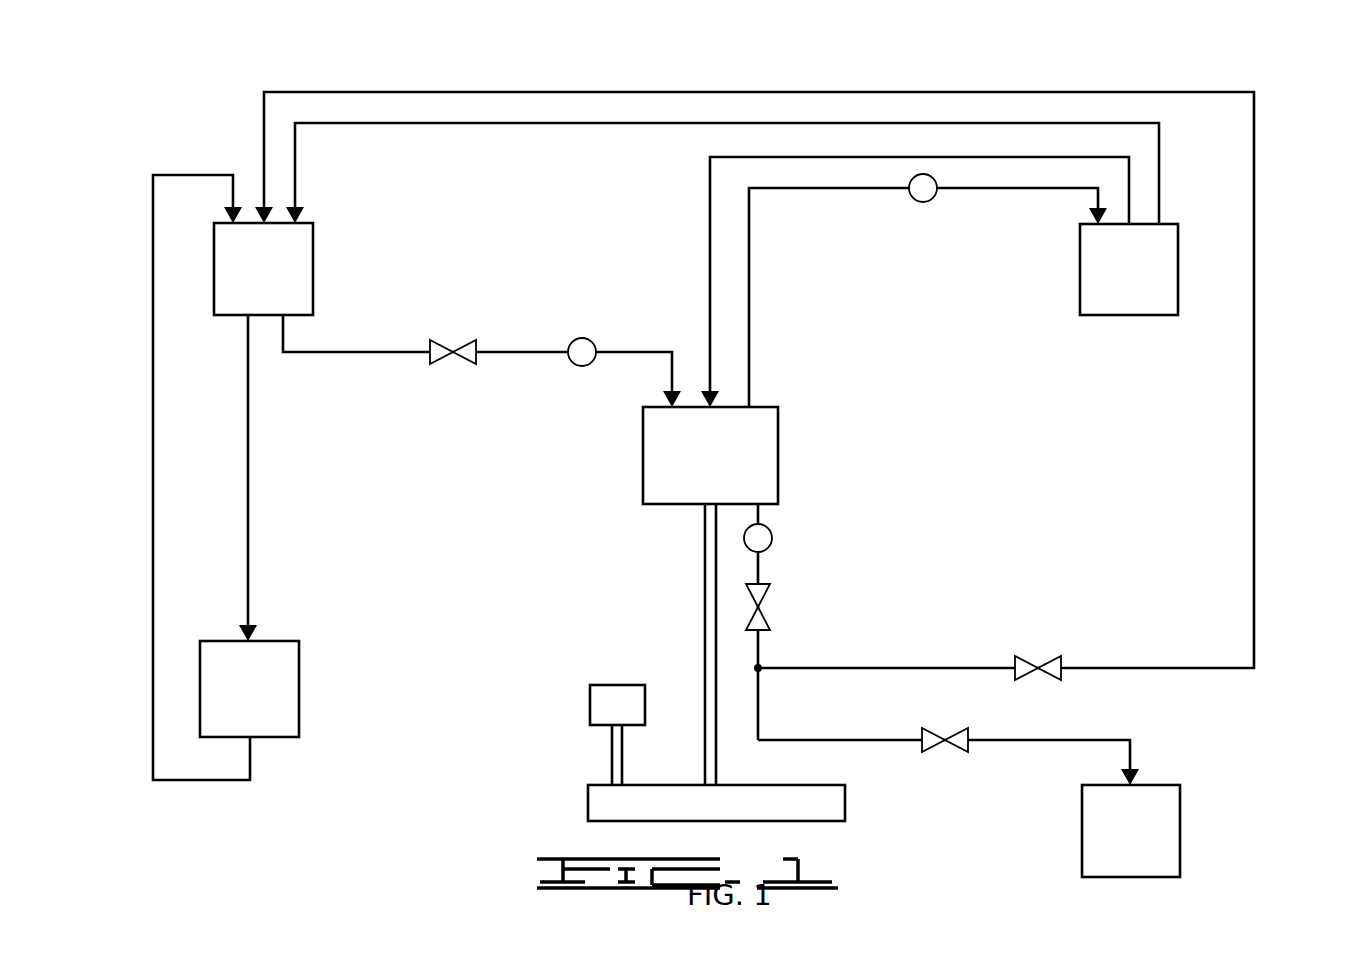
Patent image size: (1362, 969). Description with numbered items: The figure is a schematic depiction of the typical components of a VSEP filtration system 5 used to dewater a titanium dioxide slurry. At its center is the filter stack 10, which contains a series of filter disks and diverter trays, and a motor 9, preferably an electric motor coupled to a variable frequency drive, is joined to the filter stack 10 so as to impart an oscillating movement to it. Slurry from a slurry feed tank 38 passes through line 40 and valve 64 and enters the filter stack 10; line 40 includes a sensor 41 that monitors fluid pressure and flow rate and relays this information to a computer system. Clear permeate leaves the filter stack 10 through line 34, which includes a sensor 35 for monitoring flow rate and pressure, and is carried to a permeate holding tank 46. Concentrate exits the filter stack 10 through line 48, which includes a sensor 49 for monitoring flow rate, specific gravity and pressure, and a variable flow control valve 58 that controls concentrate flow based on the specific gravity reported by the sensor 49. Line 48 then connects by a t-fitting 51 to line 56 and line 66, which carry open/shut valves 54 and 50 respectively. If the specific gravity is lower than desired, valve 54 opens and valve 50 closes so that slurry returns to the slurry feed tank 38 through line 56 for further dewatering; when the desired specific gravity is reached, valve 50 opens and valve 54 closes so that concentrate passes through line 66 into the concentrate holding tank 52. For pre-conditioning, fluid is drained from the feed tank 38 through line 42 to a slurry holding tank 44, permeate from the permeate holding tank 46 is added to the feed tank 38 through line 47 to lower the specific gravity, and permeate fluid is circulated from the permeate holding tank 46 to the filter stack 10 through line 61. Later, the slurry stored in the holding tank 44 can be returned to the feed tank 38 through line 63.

The VSEP filtration system 5 is at (1152, 82).
The motor 9 is at (590, 712).
The filter stack 10 is at (643, 460).
The line 34 is at (749, 310).
The sensor 35 is at (913, 200).
The slurry feed tank 38 is at (313, 268).
The line 40 is at (358, 352).
The sensor 41 is at (592, 340).
The line 42 is at (249, 505).
The slurry holding tank 44 is at (299, 688).
The permeate holding tank 46 is at (1080, 278).
The line 47 is at (422, 125).
The line 48 is at (758, 568).
The sensor 49 is at (770, 530).
The open/shut valve 50 is at (935, 750).
The t-fitting 51 is at (760, 666).
The concentrate holding tank 52 is at (1180, 832).
The open/shut valve 54 is at (1032, 665).
The line 56 is at (1254, 370).
The variable flow control valve 58 is at (762, 612).
The line 61 is at (710, 208).
The line 63 is at (153, 435).
The valve 64 is at (460, 340).
The line 66 is at (1100, 740).